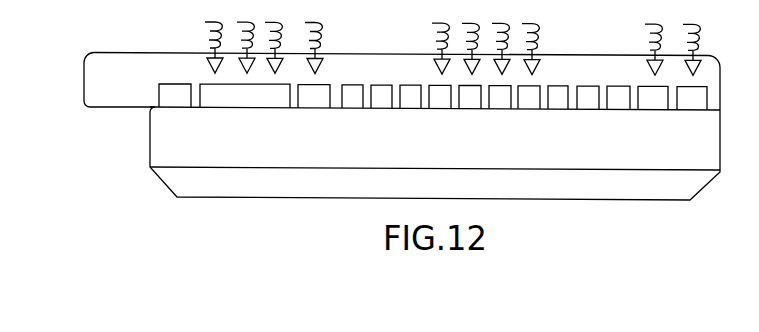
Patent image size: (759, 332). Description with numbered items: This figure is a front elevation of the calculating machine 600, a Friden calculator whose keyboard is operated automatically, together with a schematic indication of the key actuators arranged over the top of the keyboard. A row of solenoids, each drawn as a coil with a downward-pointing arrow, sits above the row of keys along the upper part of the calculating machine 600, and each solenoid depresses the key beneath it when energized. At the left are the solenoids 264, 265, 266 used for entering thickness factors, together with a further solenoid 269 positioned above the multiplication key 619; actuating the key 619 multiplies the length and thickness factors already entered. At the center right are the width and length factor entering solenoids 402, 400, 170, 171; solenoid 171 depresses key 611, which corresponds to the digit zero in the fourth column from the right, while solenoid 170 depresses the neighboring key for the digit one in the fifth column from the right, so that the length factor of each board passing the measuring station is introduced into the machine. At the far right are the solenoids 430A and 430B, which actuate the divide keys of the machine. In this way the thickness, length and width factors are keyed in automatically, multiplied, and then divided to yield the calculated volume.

The solenoid 264 is at (218, 20).
The solenoid 265 is at (262, 8).
The solenoid 266 is at (294, 9).
The coil actuator 269 is at (306, 20).
The solenoid 402 is at (445, 22).
The solenoid 400 is at (488, 9).
The solenoid 170 is at (522, 10).
The solenoid 171 is at (555, 16).
The solenoid 430A is at (673, 18).
The solenoid 430B is at (704, 32).
The key 619 is at (321, 88).
The key 611 is at (533, 93).
The calculating machine 600 is at (653, 195).